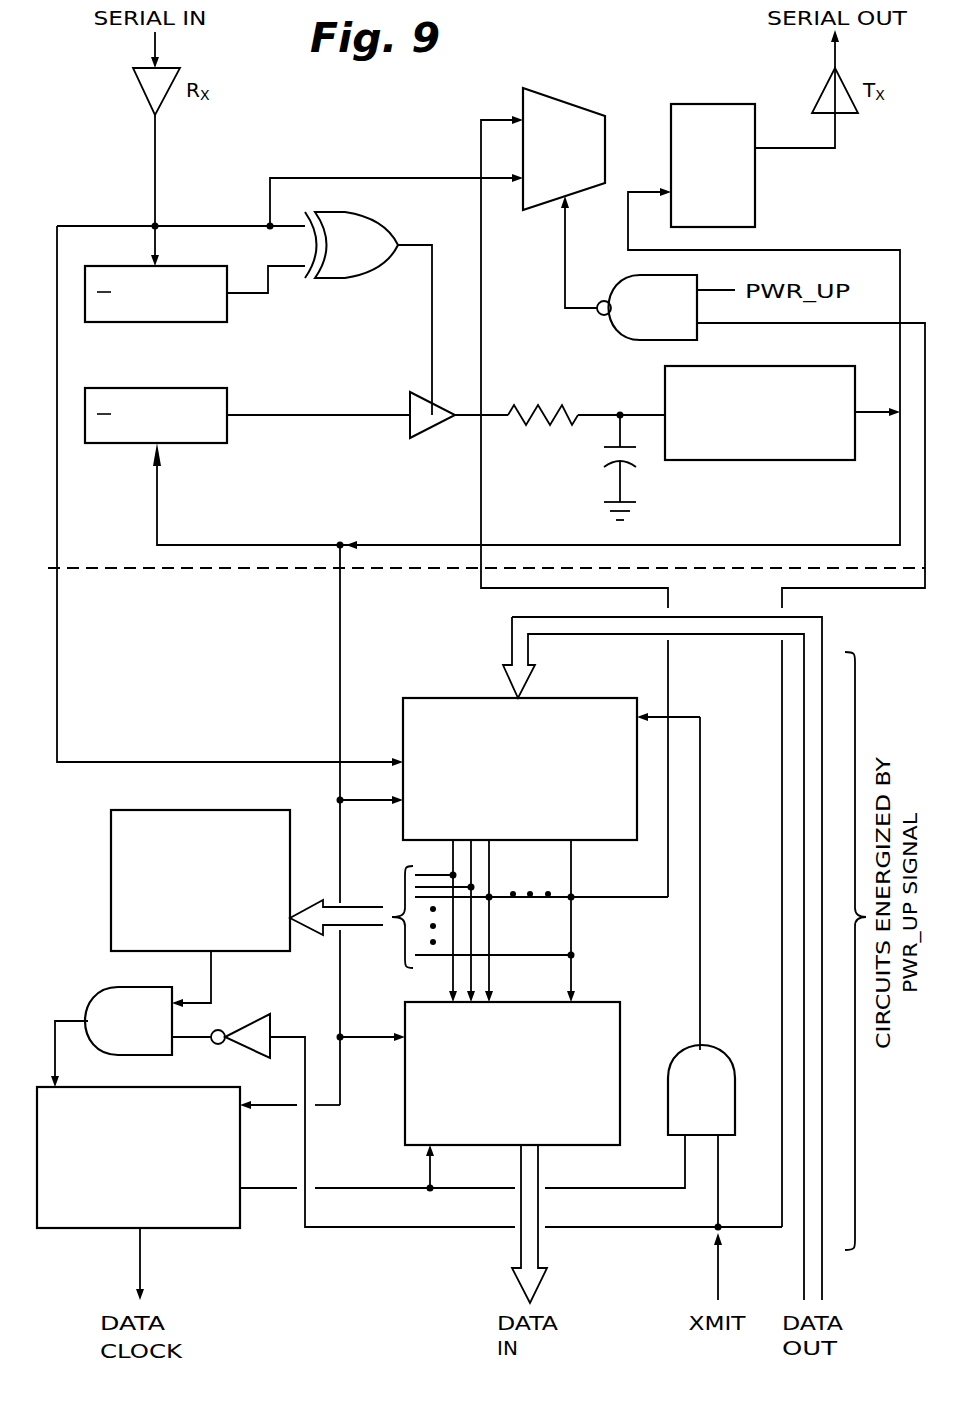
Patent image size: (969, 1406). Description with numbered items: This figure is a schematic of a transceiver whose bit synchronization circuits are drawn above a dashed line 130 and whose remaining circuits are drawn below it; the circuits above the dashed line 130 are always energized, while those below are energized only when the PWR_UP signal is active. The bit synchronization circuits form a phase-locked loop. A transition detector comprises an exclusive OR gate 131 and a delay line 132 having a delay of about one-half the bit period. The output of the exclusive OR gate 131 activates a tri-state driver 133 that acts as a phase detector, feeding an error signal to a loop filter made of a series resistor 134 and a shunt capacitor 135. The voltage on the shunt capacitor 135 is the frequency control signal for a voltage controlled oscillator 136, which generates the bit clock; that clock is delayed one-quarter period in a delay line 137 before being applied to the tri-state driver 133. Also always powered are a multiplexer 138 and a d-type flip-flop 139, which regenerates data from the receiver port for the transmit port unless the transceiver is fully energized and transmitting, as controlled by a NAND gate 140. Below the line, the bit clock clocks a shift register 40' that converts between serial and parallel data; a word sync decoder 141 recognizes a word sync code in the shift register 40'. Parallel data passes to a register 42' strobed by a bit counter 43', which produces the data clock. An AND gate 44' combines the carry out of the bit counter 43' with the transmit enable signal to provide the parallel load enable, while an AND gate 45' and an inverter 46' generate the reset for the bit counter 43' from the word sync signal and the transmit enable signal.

The dashed line 130 is at (187, 582).
The exclusive OR gate 131 is at (348, 280).
The delay line 132 is at (200, 322).
The tri-state driver 133 is at (428, 438).
The series resistor 134 is at (527, 401).
The shunt capacitor 135 is at (600, 463).
The voltage controlled oscillator 136 is at (772, 460).
The delay line 137 is at (200, 443).
The multiplexer 138 is at (580, 105).
The d-type flip-flop 139 is at (730, 105).
The NAND gate 140 is at (618, 341).
The word sync decoder 141 is at (111, 877).
The shift register 40' is at (520, 744).
The register 42' is at (521, 1047).
The bit counter 43' is at (138, 1190).
The AND gate 44' is at (711, 1117).
The AND gate 45' is at (103, 1012).
The inverter 46' is at (230, 1018).